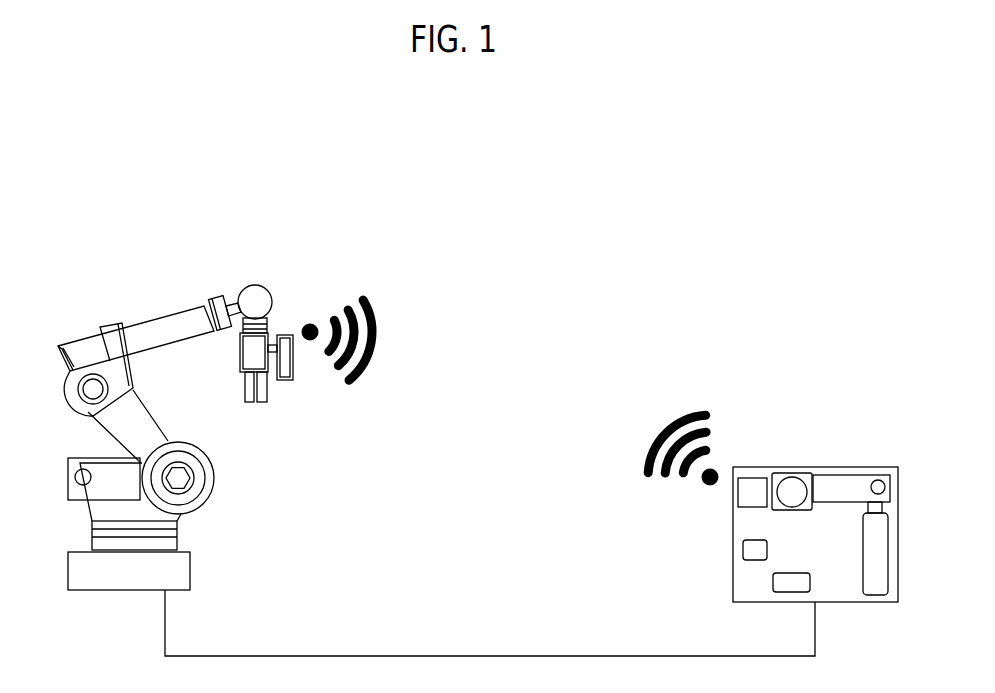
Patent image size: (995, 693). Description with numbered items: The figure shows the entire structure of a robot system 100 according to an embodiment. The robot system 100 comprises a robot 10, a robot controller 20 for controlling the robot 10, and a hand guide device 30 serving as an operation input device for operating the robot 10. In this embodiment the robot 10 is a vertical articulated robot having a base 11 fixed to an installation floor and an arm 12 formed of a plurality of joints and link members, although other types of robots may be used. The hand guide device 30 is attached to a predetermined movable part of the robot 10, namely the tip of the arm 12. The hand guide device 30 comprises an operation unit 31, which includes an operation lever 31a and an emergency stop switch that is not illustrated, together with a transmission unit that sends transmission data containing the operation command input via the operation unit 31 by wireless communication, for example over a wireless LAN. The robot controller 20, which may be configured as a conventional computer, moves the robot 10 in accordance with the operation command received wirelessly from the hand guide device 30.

The robot system 100 is at (545, 196).
The robot 10 is at (71, 302).
The base 11 is at (91, 542).
The arm 12 is at (165, 318).
The robot controller 20 is at (851, 604).
The hand guide device 30 is at (289, 404).
The operation unit 31 is at (242, 386).
The operation lever 31a is at (248, 403).